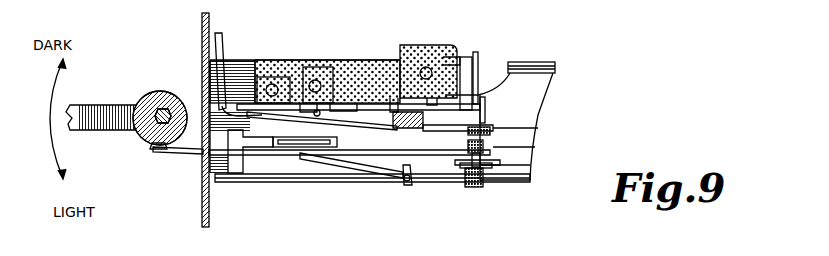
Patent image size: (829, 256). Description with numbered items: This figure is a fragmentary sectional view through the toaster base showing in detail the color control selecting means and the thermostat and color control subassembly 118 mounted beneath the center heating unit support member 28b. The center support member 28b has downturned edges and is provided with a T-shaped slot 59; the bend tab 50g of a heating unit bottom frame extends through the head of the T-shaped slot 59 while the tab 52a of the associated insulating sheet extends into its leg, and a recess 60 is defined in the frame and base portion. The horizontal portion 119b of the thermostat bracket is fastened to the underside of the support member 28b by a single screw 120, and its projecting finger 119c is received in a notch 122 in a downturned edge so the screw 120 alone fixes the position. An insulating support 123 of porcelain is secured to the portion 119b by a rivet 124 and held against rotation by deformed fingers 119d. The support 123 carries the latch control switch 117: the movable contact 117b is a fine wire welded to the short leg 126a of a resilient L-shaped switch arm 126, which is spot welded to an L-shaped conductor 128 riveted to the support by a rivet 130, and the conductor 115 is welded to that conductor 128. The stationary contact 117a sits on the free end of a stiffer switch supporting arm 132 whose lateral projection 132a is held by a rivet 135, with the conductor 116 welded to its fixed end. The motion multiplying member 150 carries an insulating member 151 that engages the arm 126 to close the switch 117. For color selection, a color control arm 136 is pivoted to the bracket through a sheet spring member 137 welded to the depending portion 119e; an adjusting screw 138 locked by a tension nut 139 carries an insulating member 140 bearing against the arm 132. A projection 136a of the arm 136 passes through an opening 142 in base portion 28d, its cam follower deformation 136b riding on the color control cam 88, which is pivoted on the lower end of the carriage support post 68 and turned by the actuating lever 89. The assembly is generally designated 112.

The portion of the base 28d is at (202, 28).
The actuating lever 89 is at (93, 104).
The color control cam 88 is at (146, 98).
The carriage support post 68 is at (162, 96).
The cam follower deformation 136b is at (152, 148).
The projection of the color control arm 136a is at (177, 153).
The opening 142 is at (202, 162).
The conductor 116 is at (220, 40).
The bend tab 50g is at (232, 148).
The rivet 135 is at (270, 88).
The rivet 130 is at (315, 80).
The lateral projection 132a is at (290, 50).
The L-shaped conductor 128 is at (317, 113).
The insulating support 123 is at (352, 72).
The switch arm 126 is at (357, 110).
The deformed fingers 119d is at (358, 92).
The rivet 124 is at (426, 66).
The switch operating and motion multiplying member 150 is at (464, 56).
The insulating member 151 is at (474, 78).
The movable contact 117b is at (487, 112).
The recess 60 is at (503, 67).
The short leg of the switch arm 126a is at (543, 103).
The switch 117 is at (512, 120).
The stationary contact 117a is at (537, 128).
The insulating member 140 is at (525, 146).
The center heating unit support member 28b is at (522, 168).
The switch supporting arm 132 is at (457, 130).
The adjusting screw 138 is at (478, 190).
The tension nut 139 is at (490, 172).
The T-shaped slot 59 is at (260, 149).
The conductor 115 is at (302, 152).
The screw 120 is at (382, 130).
The horizontal portion of the thermostat bracket 119b is at (367, 167).
The sheet spring member 137 is at (330, 170).
The color control arm 136 is at (291, 142).
The tab of insulating sheet 52a is at (290, 180).
The depending portion of the thermostat bracket 119e is at (387, 188).
The thermostat and color control subassembly 118 is at (374, 234).
The notch 122 is at (410, 196).
The projecting finger 119c is at (413, 180).
The assembly 112 is at (552, 253).